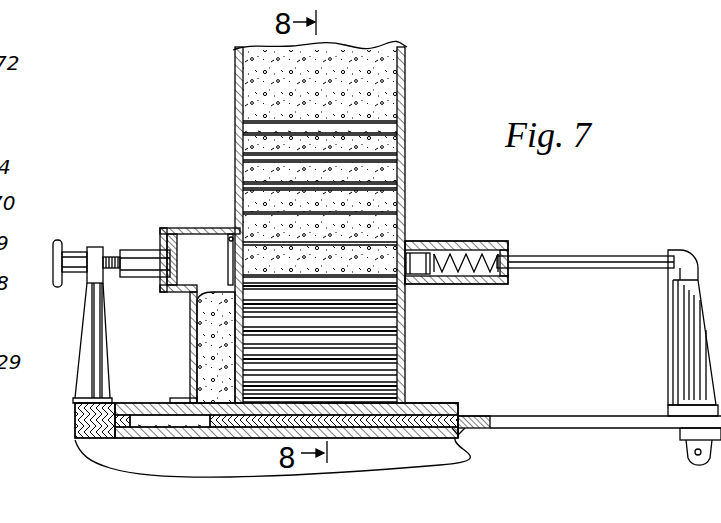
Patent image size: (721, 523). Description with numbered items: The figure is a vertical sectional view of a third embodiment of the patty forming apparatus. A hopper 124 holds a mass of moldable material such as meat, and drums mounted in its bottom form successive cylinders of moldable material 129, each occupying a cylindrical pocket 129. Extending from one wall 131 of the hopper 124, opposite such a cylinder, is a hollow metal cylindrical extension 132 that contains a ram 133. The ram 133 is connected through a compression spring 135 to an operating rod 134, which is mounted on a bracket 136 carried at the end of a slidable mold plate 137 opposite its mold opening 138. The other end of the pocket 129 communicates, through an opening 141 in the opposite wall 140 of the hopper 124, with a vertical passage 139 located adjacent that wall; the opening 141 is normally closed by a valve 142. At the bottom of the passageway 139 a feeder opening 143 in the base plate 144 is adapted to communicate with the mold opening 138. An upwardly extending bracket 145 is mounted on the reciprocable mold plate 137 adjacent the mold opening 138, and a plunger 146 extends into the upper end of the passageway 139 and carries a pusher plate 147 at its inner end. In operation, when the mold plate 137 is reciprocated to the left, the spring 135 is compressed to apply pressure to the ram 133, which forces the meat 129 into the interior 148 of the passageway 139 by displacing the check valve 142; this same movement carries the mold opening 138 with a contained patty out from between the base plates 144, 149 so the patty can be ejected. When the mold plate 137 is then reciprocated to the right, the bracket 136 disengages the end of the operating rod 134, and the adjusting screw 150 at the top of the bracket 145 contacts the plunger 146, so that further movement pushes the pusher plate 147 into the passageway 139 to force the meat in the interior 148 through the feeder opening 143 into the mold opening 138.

The hopper 124 is at (317, 222).
The cylinder of moldable material 129 is at (378, 260).
The hopper wall 131 is at (404, 149).
The hollow metal cylindrical extension 132 is at (473, 254).
The ram 133 is at (418, 269).
The operating rod 134 is at (554, 262).
The compression spring 135 is at (485, 262).
The bracket 136 is at (672, 352).
The slidable mold plate 137 is at (78, 414).
The mold opening 138 is at (182, 426).
The vertical passage 139 is at (191, 337).
The opposite hopper wall 140 is at (236, 90).
The opening 141 is at (244, 262).
The valve 142 is at (228, 266).
The feeder opening 143 is at (200, 403).
The base plate 144 is at (427, 402).
The upwardly extending bracket 145 is at (80, 353).
The plunger 146 is at (134, 262).
The pusher plate 147 is at (173, 244).
The interior of passageway 148 is at (220, 347).
The base plate 149 is at (458, 431).
The adjusting screw 150 is at (112, 255).